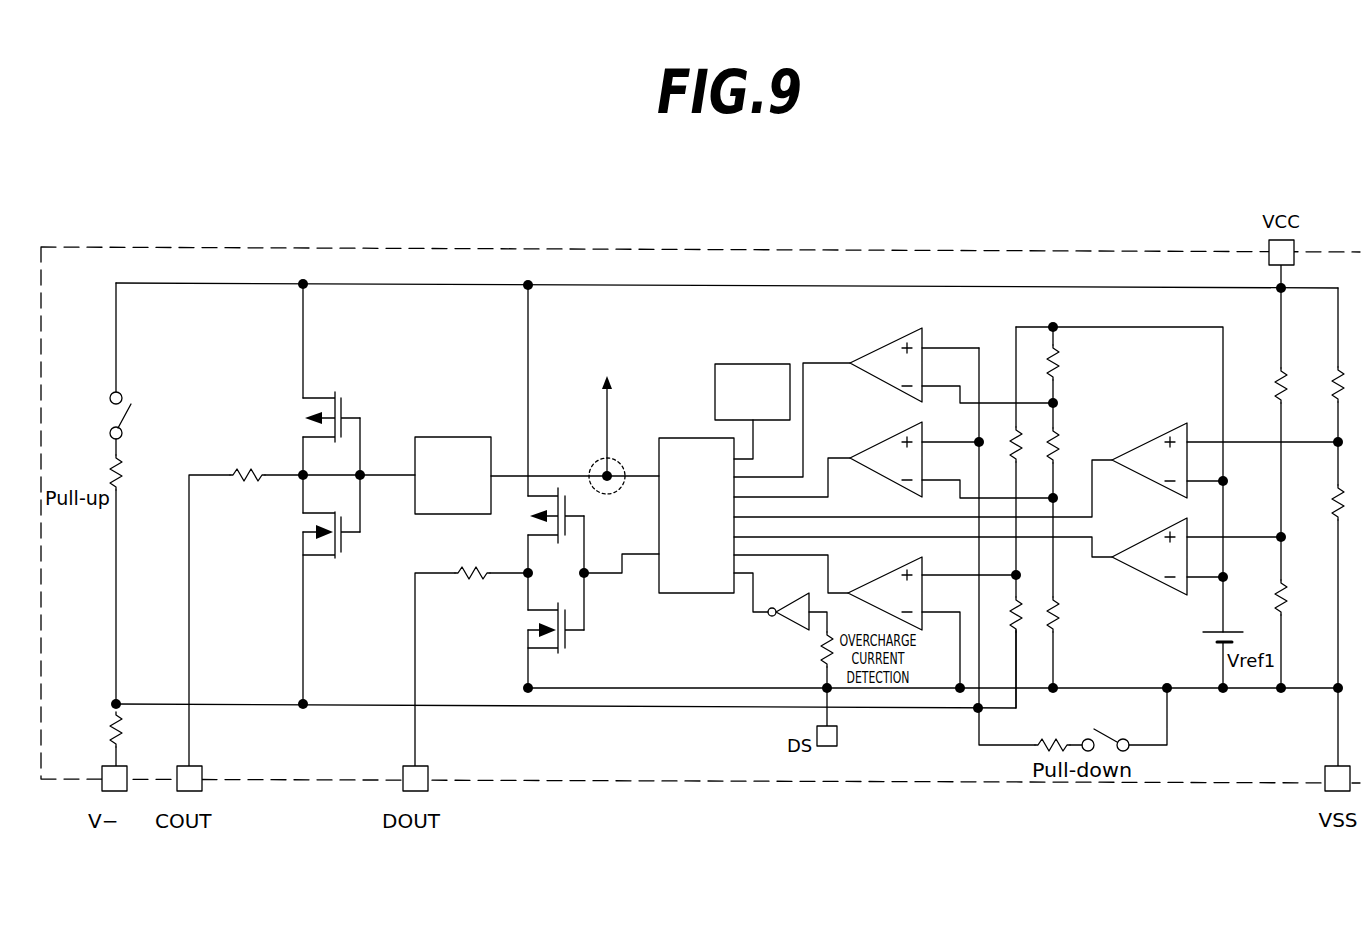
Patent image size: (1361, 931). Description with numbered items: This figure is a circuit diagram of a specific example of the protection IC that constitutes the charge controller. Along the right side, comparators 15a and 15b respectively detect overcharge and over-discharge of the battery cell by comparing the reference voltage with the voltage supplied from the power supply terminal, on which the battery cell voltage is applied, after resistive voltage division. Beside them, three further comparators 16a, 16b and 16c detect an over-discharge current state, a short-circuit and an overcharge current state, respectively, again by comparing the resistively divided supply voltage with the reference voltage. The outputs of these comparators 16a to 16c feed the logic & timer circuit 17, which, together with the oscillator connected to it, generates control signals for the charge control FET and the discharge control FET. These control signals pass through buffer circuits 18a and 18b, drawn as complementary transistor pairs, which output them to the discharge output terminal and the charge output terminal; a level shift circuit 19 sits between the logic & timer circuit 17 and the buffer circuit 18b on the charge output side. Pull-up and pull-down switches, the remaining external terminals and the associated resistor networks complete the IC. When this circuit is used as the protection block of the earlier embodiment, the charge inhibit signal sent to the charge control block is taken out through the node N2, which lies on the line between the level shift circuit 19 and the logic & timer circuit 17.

The comparator 15a is at (1148, 438).
The comparator 15b is at (1155, 528).
The comparator 16a is at (870, 472).
The comparator 16b is at (887, 343).
The comparator 16c is at (878, 578).
The logic & timer circuit 17 is at (687, 438).
The buffer circuit 18a is at (500, 616).
The buffer circuit 18b is at (276, 419).
The level shift circuit 19 is at (452, 436).
The node N2 is at (598, 463).